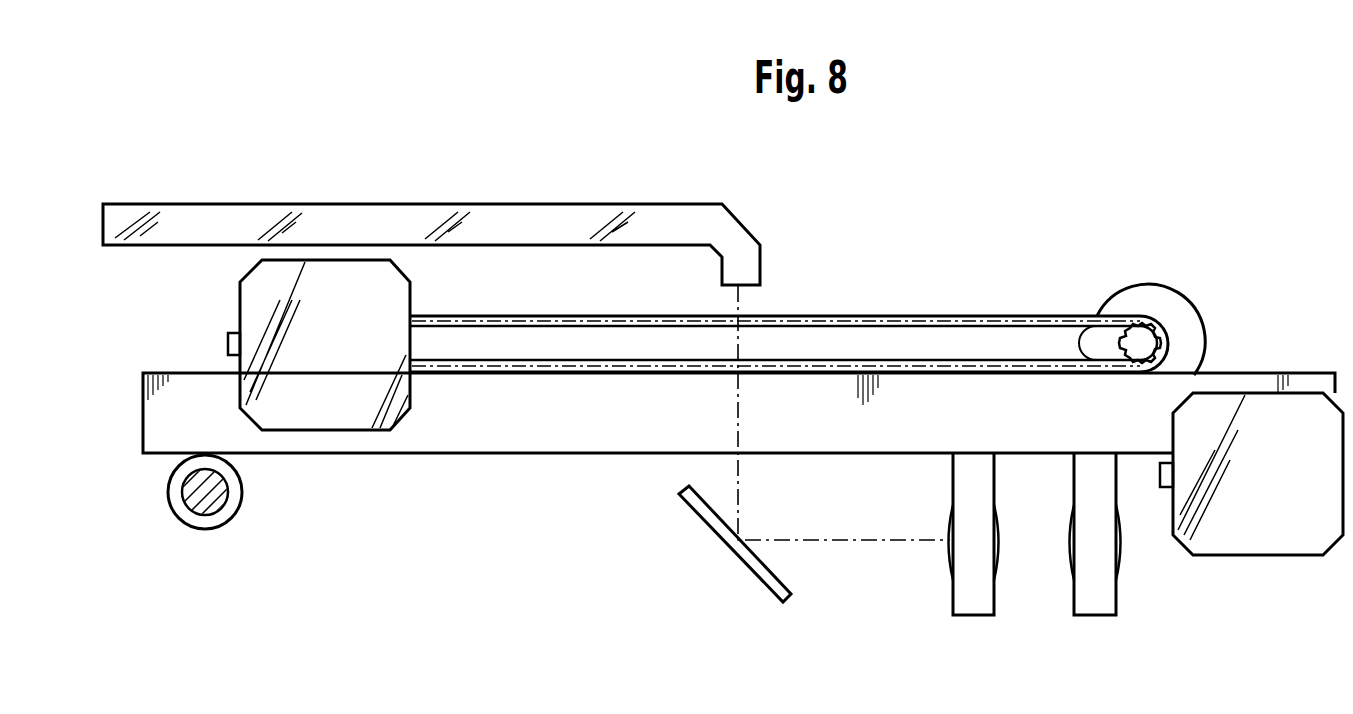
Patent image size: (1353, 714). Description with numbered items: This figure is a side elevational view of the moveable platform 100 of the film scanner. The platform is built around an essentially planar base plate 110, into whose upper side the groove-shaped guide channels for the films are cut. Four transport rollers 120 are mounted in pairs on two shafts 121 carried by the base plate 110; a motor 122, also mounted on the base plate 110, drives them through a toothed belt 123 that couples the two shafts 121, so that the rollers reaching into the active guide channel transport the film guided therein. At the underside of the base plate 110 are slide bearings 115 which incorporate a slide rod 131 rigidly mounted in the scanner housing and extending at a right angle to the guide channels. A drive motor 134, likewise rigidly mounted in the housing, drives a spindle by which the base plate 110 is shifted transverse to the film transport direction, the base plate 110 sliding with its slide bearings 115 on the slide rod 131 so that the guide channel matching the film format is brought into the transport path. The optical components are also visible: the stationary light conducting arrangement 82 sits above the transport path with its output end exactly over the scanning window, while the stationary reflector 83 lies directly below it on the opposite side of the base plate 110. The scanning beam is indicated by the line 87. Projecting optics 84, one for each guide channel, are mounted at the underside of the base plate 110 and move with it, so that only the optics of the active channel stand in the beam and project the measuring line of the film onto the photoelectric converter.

The light conducting arrangement 82 is at (571, 215).
The moveable platform 100 is at (892, 276).
The base plate 110 is at (158, 397).
The slide bearing 115 is at (236, 497).
The slide rod 131 is at (207, 512).
The motor 122 is at (262, 291).
The toothed belt 123 is at (1046, 320).
The transport roller 120 is at (1158, 305).
The shaft 121 is at (1170, 341).
The reflector 83 is at (700, 509).
The optical axis 87 is at (845, 542).
The projecting optics 84 is at (975, 597).
The drive motor 134 is at (1258, 522).